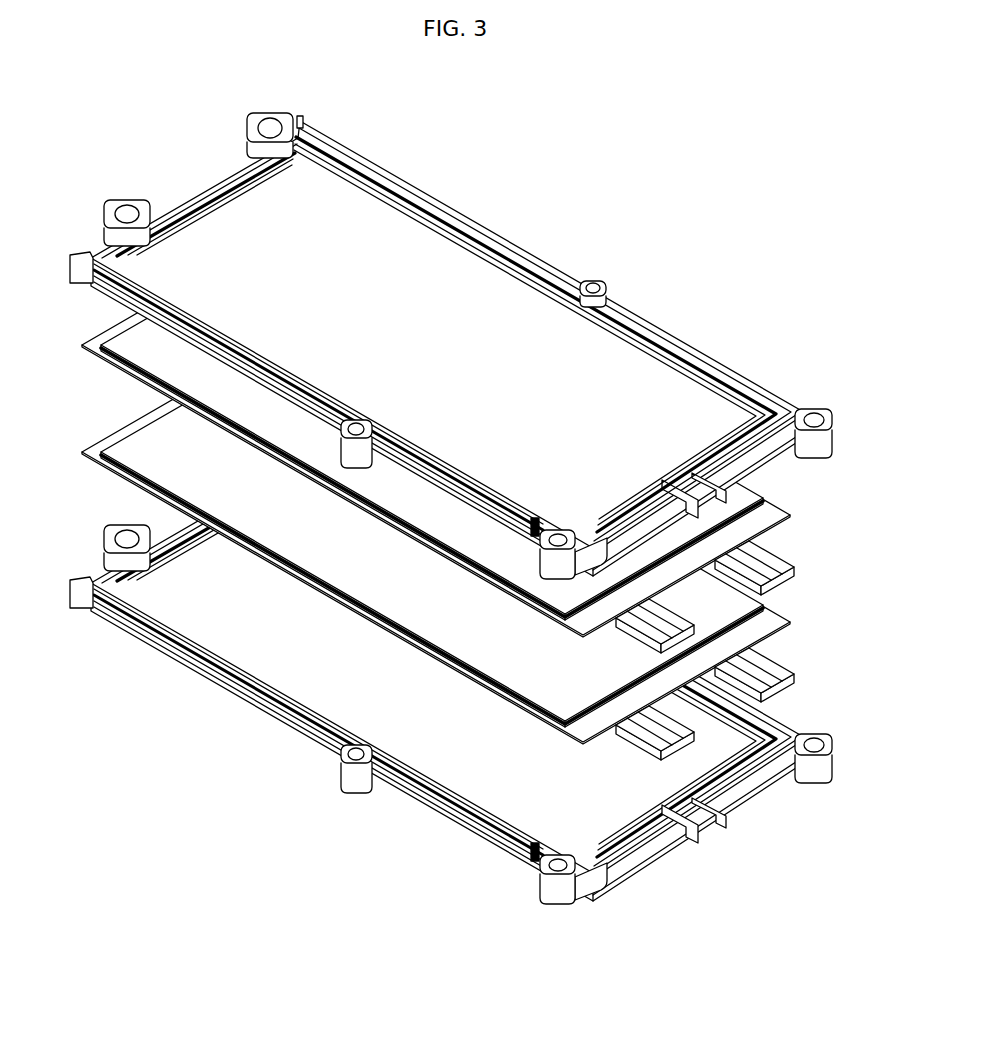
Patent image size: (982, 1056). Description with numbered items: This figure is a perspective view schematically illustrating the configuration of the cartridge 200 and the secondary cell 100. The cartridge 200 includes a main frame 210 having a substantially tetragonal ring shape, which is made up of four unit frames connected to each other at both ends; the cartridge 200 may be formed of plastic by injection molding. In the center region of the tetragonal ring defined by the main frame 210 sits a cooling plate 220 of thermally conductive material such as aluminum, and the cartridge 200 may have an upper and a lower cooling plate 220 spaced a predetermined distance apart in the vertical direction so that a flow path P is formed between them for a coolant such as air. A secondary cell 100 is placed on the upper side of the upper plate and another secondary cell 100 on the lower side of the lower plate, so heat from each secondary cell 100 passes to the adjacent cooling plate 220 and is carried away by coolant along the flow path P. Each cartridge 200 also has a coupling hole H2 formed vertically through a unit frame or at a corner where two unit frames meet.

The cartridge 200 is at (453, 491).
The main frame 210 is at (445, 207).
The cooling plate 220 is at (493, 273).
The secondary cell 100 is at (427, 492).
The flow path P is at (232, 362).
The coupling hole H2 is at (268, 124).